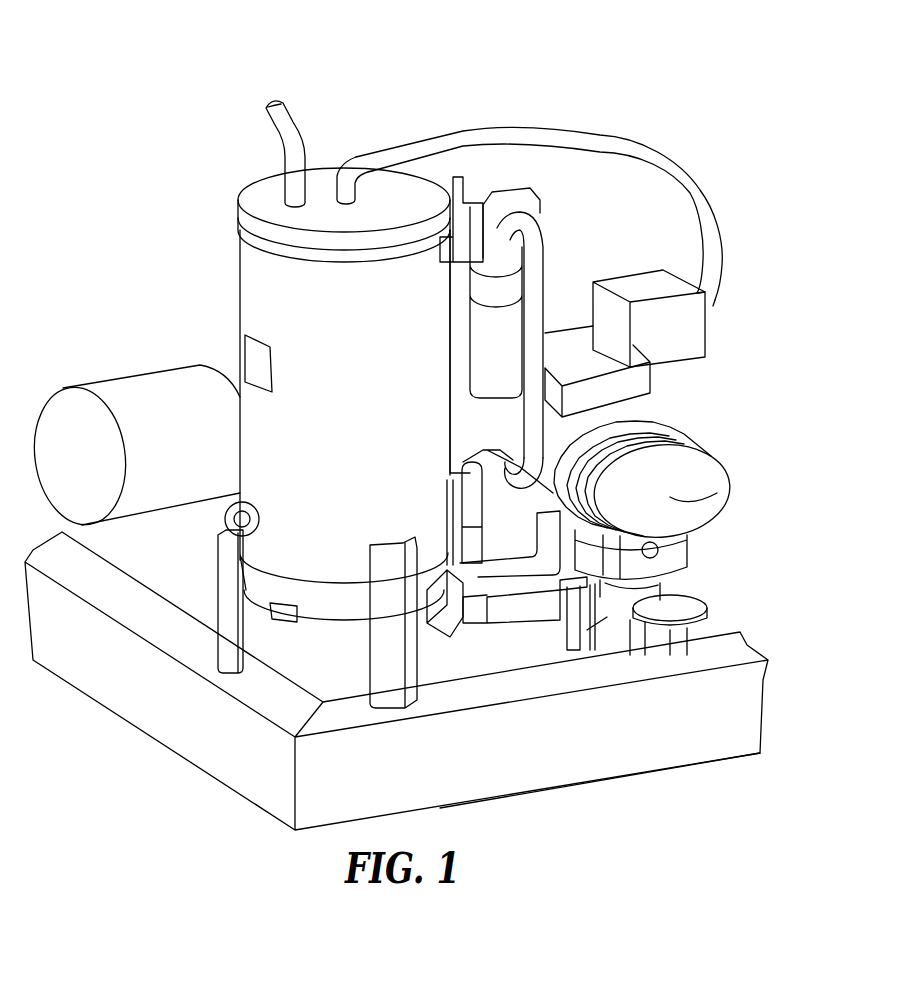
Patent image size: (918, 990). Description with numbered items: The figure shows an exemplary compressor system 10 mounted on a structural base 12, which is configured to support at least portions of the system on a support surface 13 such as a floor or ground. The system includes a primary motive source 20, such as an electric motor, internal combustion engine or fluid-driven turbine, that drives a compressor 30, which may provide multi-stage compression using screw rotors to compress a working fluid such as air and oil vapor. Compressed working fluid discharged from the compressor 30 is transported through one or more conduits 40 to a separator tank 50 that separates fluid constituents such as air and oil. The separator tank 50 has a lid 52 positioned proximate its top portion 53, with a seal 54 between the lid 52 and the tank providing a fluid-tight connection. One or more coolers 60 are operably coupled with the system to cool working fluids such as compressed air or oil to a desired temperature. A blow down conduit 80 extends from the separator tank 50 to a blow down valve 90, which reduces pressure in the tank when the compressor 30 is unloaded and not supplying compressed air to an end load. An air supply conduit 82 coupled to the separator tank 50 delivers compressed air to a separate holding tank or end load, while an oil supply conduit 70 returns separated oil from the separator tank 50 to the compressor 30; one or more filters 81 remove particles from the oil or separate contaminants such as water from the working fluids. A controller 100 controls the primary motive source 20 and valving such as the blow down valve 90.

The compressor system 10 is at (547, 71).
The structural base 12 is at (493, 760).
The support surface 13 is at (600, 795).
The primary motive source 20 is at (650, 372).
The compressor 30 is at (728, 486).
The conduits 40 is at (533, 617).
The separator tank 50 is at (334, 469).
The lid 52 is at (247, 188).
The top portion 53 is at (218, 175).
The seal 54 is at (247, 243).
The coolers 60 is at (142, 450).
The oil supply conduit 70 is at (553, 270).
The blow down conduit 80 is at (593, 133).
The filters 81 is at (490, 287).
The air supply conduit 82 is at (294, 112).
The blow down valve 90 is at (715, 306).
The controller 100 is at (649, 318).